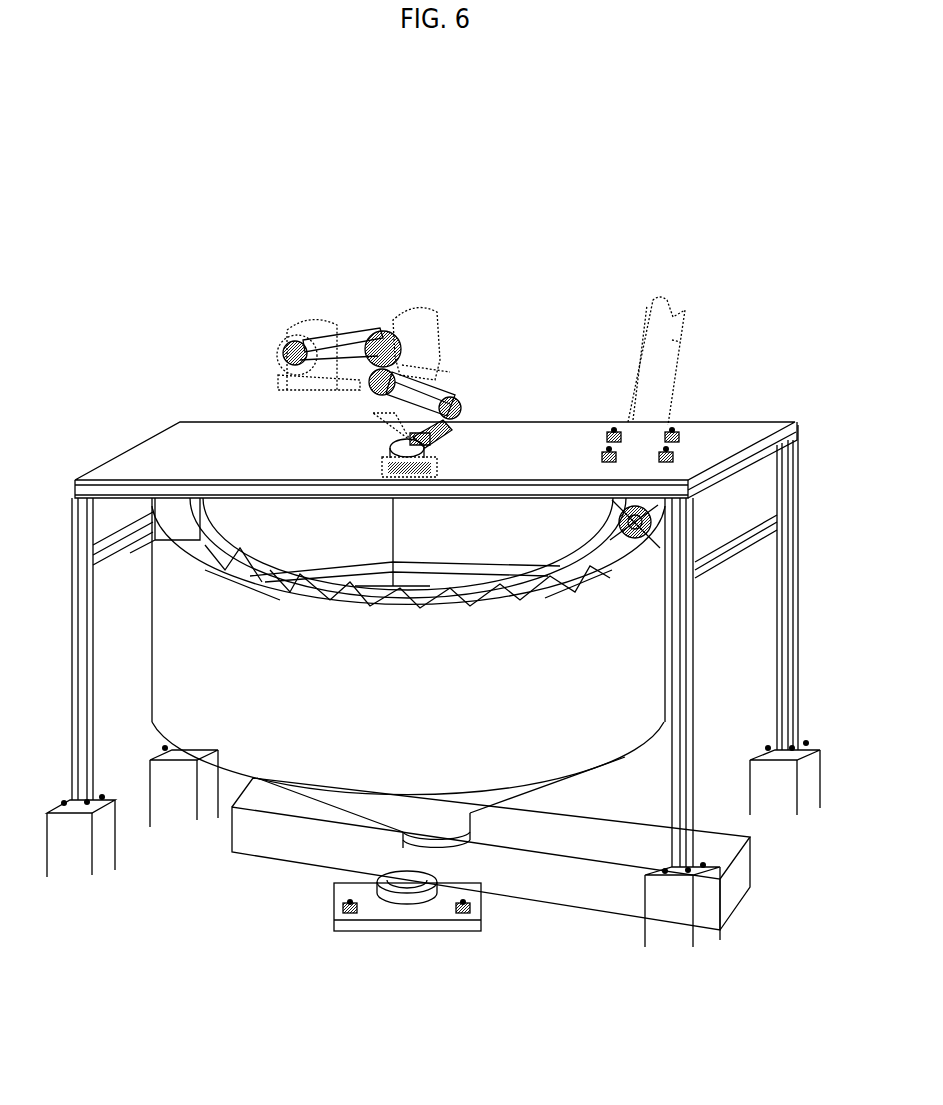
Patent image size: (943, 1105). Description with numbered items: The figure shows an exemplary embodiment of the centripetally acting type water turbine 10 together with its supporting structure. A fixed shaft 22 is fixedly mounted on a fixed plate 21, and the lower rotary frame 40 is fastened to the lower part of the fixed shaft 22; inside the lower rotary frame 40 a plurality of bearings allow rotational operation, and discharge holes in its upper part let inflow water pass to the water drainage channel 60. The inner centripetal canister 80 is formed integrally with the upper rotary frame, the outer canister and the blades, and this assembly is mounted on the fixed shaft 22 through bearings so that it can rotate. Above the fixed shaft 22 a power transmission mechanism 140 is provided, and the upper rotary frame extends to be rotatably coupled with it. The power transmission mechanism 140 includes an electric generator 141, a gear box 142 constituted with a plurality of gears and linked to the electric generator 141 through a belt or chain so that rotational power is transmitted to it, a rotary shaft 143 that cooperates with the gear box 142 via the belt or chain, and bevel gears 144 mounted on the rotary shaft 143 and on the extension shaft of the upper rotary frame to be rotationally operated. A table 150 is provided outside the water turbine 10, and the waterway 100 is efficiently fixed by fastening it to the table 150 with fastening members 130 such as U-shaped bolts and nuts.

The centripetally acting type water turbine 10 is at (178, 170).
The fixed plate 21 is at (352, 937).
The fixed shaft 22 is at (393, 532).
The lower rotary frame 40 is at (400, 931).
The water drainage channel 60 is at (255, 848).
The inner centripetal canister 80 is at (538, 742).
The waterway 100 is at (672, 345).
The fastening members 130 is at (614, 427).
The power transmission mechanism 140 is at (452, 335).
The electric generator 141 is at (318, 325).
The gear box 142 is at (418, 320).
The rotary shaft 143 is at (470, 402).
The bevel gears 144 is at (385, 397).
The table 150 is at (132, 445).